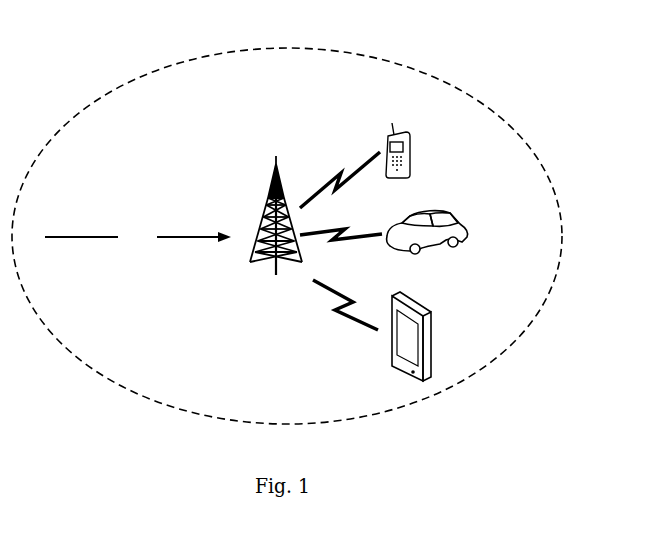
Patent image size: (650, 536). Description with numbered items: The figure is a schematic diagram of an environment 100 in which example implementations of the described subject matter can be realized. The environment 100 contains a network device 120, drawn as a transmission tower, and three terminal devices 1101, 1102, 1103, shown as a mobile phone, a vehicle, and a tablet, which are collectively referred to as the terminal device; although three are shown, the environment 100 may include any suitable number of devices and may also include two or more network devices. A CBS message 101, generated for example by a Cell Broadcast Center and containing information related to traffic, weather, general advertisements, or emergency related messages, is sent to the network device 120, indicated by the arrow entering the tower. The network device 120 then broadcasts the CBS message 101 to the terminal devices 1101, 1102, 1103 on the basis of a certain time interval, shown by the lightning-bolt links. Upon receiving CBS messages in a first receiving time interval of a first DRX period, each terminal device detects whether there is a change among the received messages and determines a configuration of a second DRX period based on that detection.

The environment 100 is at (148, 52).
The CBS message 101 is at (138, 237).
The network device 120 is at (262, 220).
The terminal device 1101 is at (417, 156).
The terminal device 1102 is at (468, 231).
The terminal device 1103 is at (433, 347).